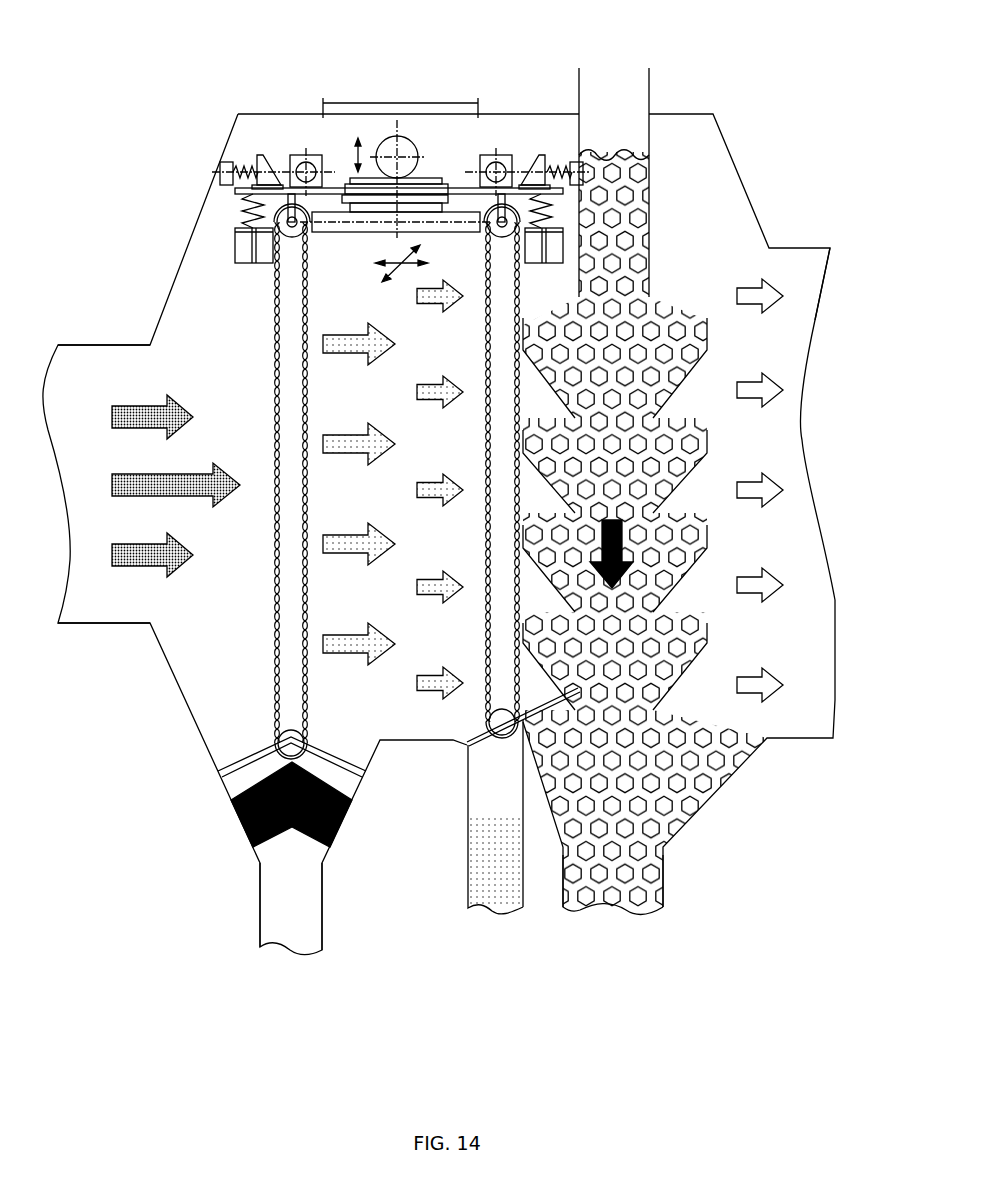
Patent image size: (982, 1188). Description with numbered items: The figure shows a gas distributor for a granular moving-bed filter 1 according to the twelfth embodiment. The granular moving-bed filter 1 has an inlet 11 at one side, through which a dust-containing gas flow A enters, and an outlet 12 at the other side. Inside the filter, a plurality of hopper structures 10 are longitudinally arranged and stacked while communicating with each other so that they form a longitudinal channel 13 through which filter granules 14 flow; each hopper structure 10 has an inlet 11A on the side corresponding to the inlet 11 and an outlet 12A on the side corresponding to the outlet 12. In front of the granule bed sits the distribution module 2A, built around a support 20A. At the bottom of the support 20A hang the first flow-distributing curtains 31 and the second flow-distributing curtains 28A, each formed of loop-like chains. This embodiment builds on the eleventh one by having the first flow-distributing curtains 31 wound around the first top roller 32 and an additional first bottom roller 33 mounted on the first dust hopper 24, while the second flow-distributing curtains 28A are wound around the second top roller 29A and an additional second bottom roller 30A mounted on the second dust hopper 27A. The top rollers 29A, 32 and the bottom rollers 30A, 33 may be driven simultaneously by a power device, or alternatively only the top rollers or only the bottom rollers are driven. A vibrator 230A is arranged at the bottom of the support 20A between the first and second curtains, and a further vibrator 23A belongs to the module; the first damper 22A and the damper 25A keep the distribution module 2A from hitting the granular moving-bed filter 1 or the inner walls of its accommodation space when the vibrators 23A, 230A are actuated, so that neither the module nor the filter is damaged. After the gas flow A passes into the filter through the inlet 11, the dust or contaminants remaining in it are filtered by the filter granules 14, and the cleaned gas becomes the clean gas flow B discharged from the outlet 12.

The granular moving-bed filter 1 is at (679, 73).
The distribution module 2A is at (256, 90).
The hopper structure 10 is at (651, 223).
The inlet 11 is at (85, 485).
The inlet 11A is at (562, 425).
The outlet 12 is at (790, 443).
The outlet 12A is at (670, 427).
The longitudinal channel 13 is at (626, 896).
The filter granules 14 is at (584, 902).
The support 20A is at (235, 191).
The first damper 22A is at (235, 262).
The vibrator 23A is at (402, 153).
The first dust hopper 24 is at (468, 860).
The damper 25A is at (250, 165).
The second dust hopper 27A is at (270, 904).
The second flow-distributing curtain 28A is at (277, 300).
The second top roller 29A is at (297, 238).
The second bottom roller 30A is at (280, 741).
The first flow-distributing curtain 31 is at (488, 418).
The first top roller 32 is at (494, 258).
The first bottom roller 33 is at (490, 717).
The vibrator 230A is at (357, 224).
The gas flow A is at (120, 417).
The clean gas flow B is at (743, 392).